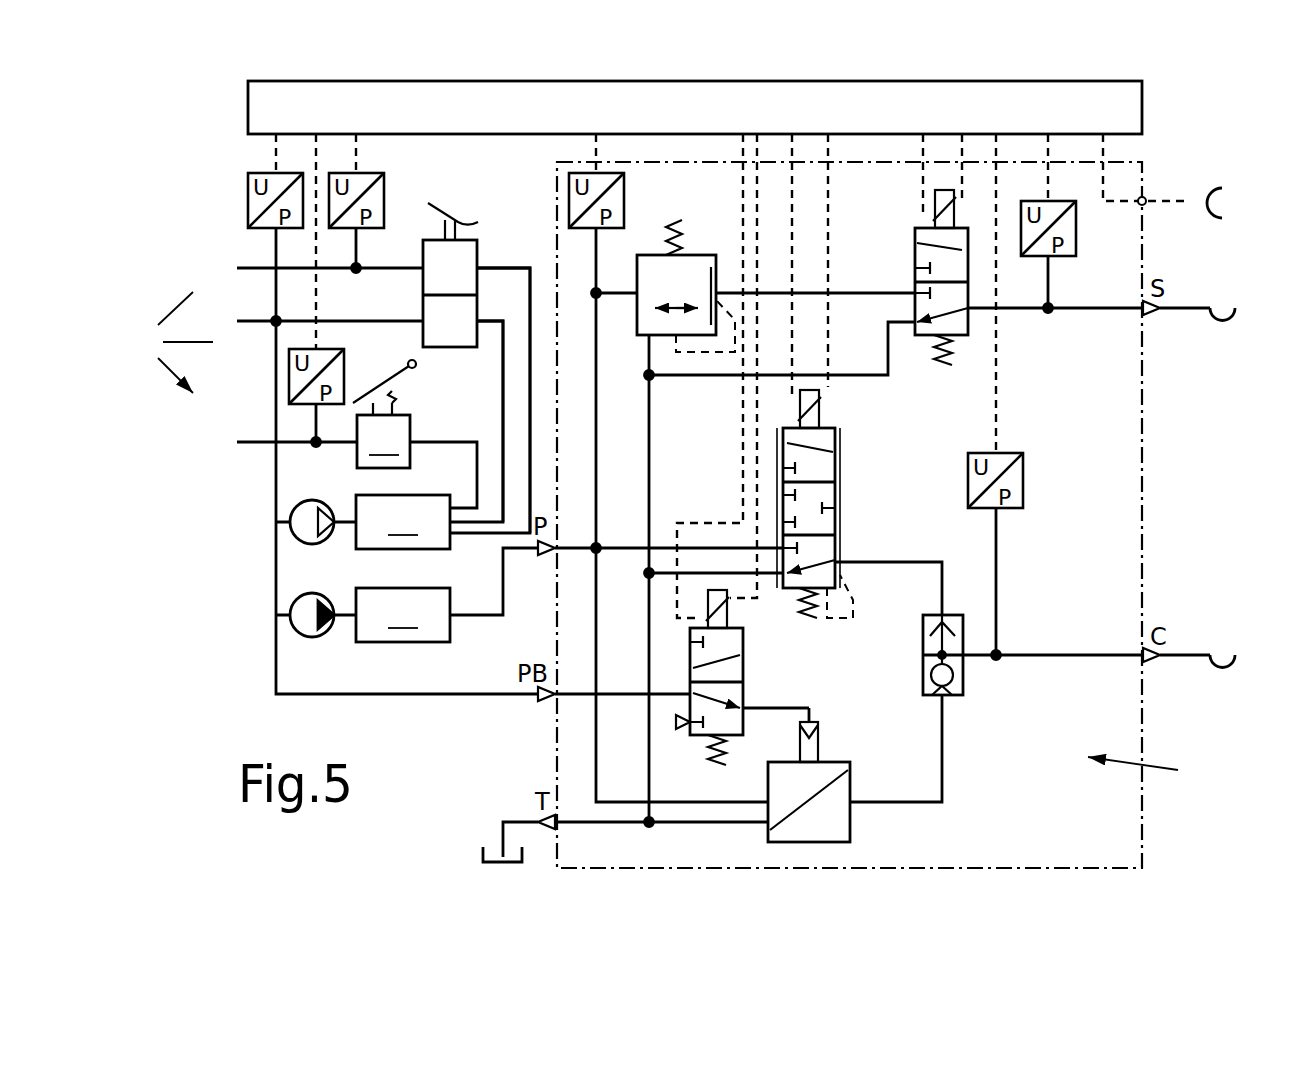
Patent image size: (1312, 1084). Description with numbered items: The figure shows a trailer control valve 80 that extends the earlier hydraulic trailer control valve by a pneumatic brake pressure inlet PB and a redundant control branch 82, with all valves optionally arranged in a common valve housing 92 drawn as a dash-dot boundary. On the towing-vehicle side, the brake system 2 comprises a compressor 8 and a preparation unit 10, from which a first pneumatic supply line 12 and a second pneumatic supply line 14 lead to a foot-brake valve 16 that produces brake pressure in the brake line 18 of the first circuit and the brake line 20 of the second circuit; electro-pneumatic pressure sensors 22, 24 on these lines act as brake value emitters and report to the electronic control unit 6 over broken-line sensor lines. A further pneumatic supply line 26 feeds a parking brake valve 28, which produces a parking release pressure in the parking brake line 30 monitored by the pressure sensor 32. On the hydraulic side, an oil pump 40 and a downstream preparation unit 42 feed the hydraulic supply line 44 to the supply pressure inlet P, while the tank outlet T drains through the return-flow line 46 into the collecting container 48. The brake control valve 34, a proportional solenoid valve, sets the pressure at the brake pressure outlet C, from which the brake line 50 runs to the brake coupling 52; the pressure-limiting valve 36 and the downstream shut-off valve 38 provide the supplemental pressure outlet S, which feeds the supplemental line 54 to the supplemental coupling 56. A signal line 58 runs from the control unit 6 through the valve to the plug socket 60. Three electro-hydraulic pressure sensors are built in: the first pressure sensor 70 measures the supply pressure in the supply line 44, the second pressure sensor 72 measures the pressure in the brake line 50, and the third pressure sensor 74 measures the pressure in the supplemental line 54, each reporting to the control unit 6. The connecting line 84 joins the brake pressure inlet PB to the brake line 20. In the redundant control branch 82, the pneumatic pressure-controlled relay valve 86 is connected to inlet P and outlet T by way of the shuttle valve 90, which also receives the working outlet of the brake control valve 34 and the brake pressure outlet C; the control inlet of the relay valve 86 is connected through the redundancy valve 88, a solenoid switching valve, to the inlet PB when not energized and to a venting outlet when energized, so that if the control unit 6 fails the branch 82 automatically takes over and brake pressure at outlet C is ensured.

The brake system 2 is at (178, 342).
The electronic control unit 6 is at (703, 117).
The compressor 8 is at (290, 522).
The preparation unit 10 is at (403, 522).
The first pneumatic supply line 12 is at (498, 267).
The second pneumatic supply line 14 is at (500, 398).
The foot-brake valve 16 is at (423, 288).
The brake line 18 is at (250, 268).
The brake line 20 is at (250, 321).
The electro-pneumatic pressure sensor 22 is at (383, 200).
The electro-pneumatic pressure sensor 24 is at (248, 204).
The pneumatic supply line 26 is at (477, 474).
The parking brake valve 28 is at (384, 414).
The parking brake line 30 is at (250, 442).
The electro-pneumatic pressure sensor 32 is at (289, 380).
The brake control valve 34 is at (840, 492).
The pressure-limiting valve 36 is at (700, 255).
The shut-off valve 38 is at (915, 268).
The oil pump 40 is at (290, 615).
The preparation unit 42 is at (403, 615).
The hydraulic supply line 44 is at (503, 585).
The return-flow line 46 is at (503, 833).
The collecting container 48 is at (492, 862).
The brake line 50 is at (1185, 653).
The brake coupling 52 is at (1225, 668).
The supplemental line 54 is at (1177, 303).
The supplemental coupling 56 is at (1224, 322).
The signal line 58 is at (1190, 200).
The plug socket 60 is at (1221, 220).
The first pressure sensor 70 is at (590, 229).
The second pressure sensor 72 is at (1023, 482).
The third pressure sensor 74 is at (1075, 228).
The trailer control valve 80 is at (928, 515).
The redundant control branch 82 is at (1152, 772).
The connecting line 84 is at (276, 670).
The relay valve 86 is at (832, 762).
The redundancy valve 88 is at (743, 668).
The shuttle valve 90 is at (963, 680).
The common valve housing 92 is at (1142, 447).